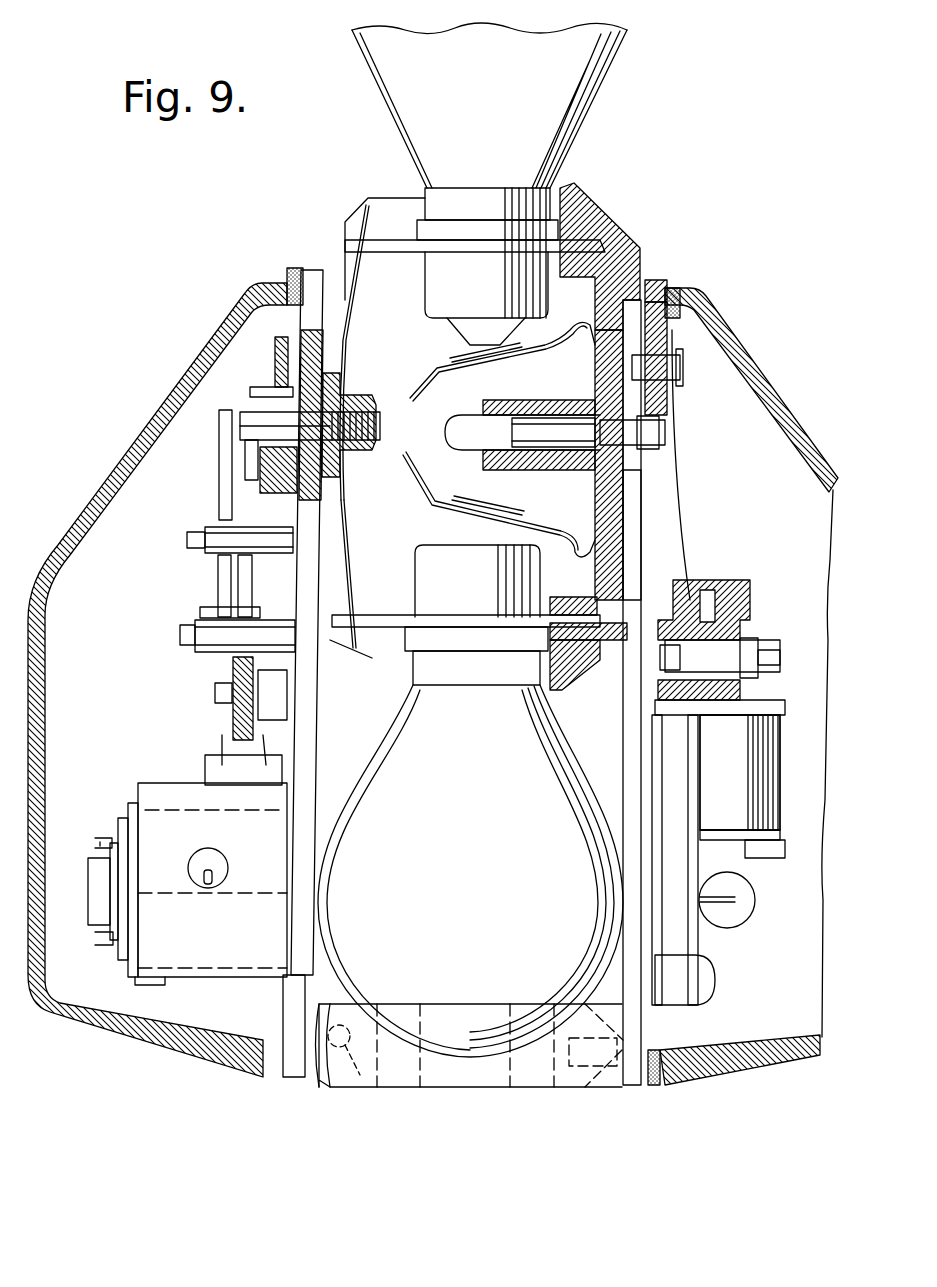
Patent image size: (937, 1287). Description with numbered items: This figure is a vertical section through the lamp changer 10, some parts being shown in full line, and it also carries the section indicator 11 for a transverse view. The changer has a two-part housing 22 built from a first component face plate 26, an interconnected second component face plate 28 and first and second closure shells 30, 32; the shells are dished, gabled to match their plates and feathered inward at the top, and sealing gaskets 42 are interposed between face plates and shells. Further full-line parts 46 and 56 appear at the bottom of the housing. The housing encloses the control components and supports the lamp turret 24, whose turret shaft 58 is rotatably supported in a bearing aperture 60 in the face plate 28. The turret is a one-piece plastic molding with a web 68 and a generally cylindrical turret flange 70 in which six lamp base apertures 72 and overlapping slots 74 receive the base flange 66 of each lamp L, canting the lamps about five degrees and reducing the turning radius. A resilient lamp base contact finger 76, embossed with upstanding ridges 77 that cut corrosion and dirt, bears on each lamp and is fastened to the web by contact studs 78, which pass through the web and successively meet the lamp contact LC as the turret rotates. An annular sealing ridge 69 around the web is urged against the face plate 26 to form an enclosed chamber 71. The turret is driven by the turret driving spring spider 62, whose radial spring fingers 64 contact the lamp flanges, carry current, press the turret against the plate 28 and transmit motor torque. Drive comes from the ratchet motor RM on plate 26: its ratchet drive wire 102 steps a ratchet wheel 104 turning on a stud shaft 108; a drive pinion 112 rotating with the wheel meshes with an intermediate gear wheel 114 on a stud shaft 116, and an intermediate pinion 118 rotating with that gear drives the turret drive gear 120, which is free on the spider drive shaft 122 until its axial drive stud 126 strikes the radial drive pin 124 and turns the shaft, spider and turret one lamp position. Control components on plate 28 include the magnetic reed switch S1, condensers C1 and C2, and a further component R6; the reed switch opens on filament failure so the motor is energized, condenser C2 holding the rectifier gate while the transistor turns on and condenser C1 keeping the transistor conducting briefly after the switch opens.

The lamp changer 10 is at (300, 235).
The section line 11- 11 is at (668, 185).
The lamp L is at (590, 72).
The housing 22 is at (165, 660).
The lamp turret 24 is at (610, 195).
The first component face plate 26 is at (302, 597).
The second component face plate 28 is at (628, 716).
The first closure shell 30 is at (195, 383).
The second closure shell 32 is at (765, 400).
The sealing gaskets 42 is at (295, 280).
The lamp tray 46 is at (445, 1076).
The retaining clip 56 is at (350, 1082).
The turret shaft 58 is at (466, 420).
The bearing aperture 60 is at (664, 441).
The turret driving spring spider 62 is at (362, 290).
The spring fingers 64 is at (350, 580).
The base flange 66 is at (462, 245).
The web 68 is at (612, 532).
The sealing ridge 69 is at (642, 284).
The turret flange 70 is at (372, 660).
The enclosed chamber 71 is at (636, 500).
The lamp base apertures 72 is at (400, 200).
The slots 74 is at (352, 242).
The lamp base contact finger 76 is at (425, 376).
The upstanding ridges 77 is at (452, 350).
The contact studs 78 is at (688, 296).
The ratchet drive wire 102 is at (218, 742).
The ratchet wheel 104 is at (236, 718).
The stud shaft 108 is at (185, 634).
The drive pinion 112 is at (200, 610).
The intermediate gear wheel 114 is at (219, 485).
The stud shaft 116 is at (190, 541).
The intermediate pinion 118 is at (225, 570).
The turret drive gear 120 is at (275, 356).
The spider drive shaft 122 is at (252, 414).
The drive pin 124 is at (240, 458).
The drive stud 126 is at (260, 393).
The lamp contact LC is at (666, 340).
The ratchet motor RM is at (128, 823).
The relay R6 is at (88, 886).
The magnetic reed switch S1 is at (775, 775).
The condenser C2 is at (760, 809).
The condenser C1 is at (755, 905).